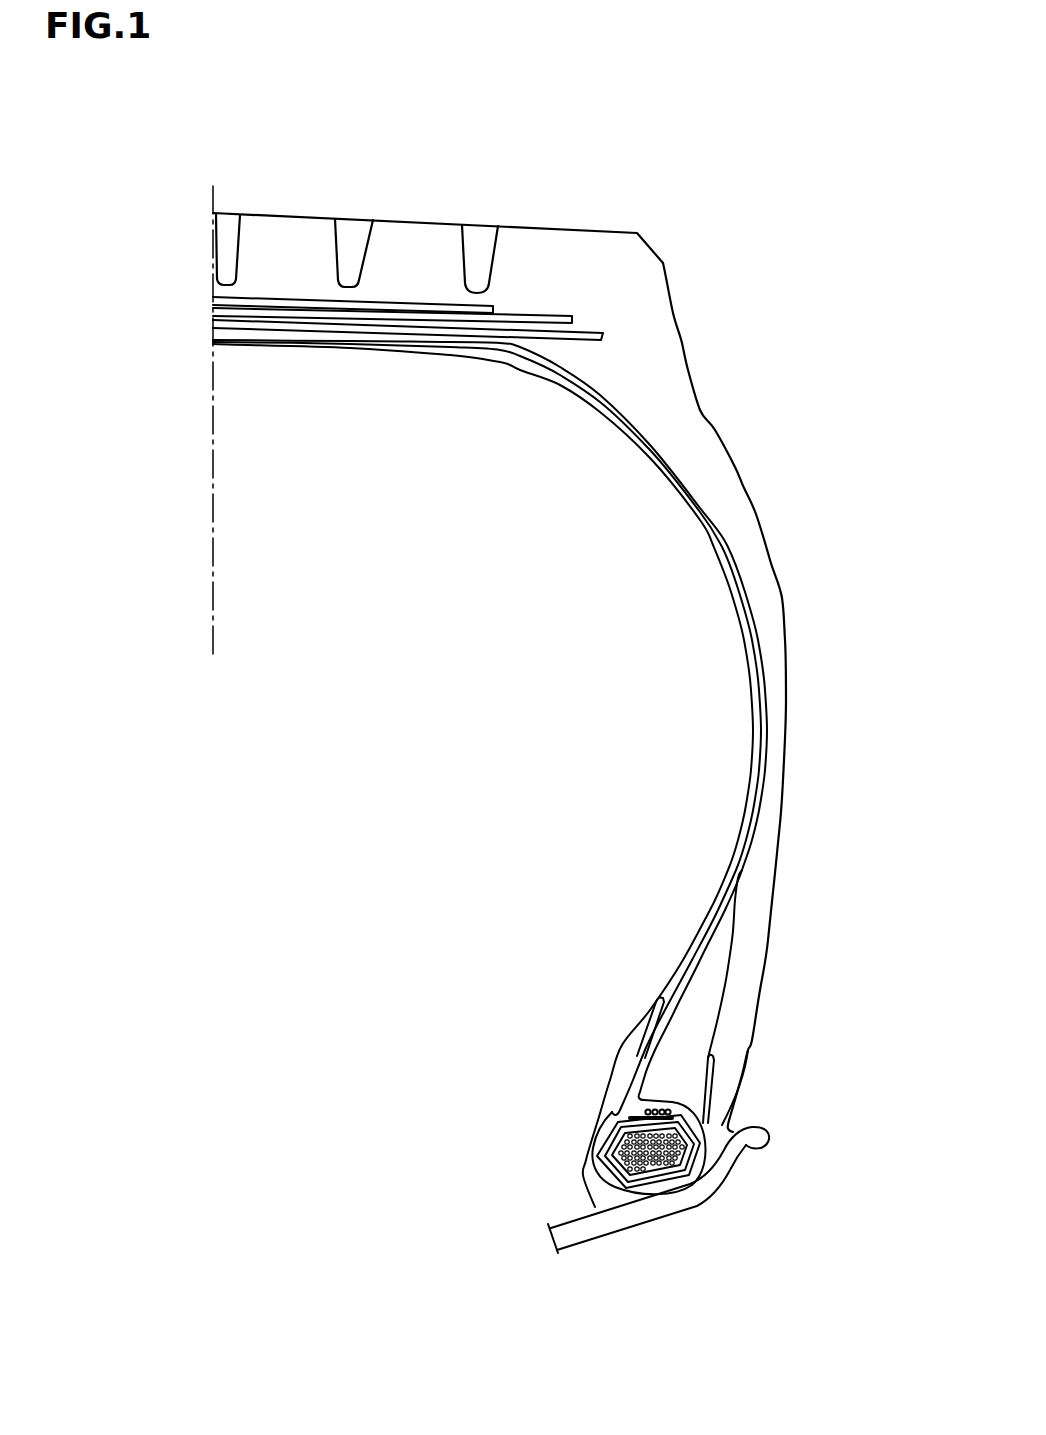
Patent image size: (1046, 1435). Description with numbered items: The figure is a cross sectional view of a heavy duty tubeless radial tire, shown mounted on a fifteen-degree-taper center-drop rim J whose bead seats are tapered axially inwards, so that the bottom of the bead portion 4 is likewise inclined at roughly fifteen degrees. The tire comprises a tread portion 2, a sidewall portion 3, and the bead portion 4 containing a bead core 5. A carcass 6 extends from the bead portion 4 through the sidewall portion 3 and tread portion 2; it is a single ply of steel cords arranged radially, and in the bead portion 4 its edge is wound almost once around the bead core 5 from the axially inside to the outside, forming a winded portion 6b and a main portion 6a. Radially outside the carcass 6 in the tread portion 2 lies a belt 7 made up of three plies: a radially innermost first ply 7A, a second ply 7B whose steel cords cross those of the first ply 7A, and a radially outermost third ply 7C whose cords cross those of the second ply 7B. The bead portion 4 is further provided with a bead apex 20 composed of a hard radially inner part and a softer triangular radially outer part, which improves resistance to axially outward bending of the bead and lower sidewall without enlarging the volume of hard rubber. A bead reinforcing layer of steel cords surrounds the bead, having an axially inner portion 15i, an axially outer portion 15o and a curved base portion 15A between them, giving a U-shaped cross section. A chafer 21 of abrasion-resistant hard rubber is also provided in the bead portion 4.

The tread portion 2 is at (423, 237).
The sidewall portion 3 is at (812, 625).
The bead portion 4 is at (640, 1096).
The bead core 5 is at (680, 1173).
The carcass 6 is at (762, 722).
The main portion 6a is at (748, 795).
The winded portion 6b is at (628, 1118).
The belt 7 is at (334, 302).
The first ply 7A is at (213, 320).
The second ply 7B is at (213, 308).
The third ply 7C is at (213, 297).
The curved base portion 15A is at (681, 1161).
The axially inner portion 15i is at (650, 1032).
The axially outer portion 15o is at (713, 1075).
The bead apex 20 is at (712, 972).
The chafer 21 is at (720, 1121).
The rim J is at (563, 1228).